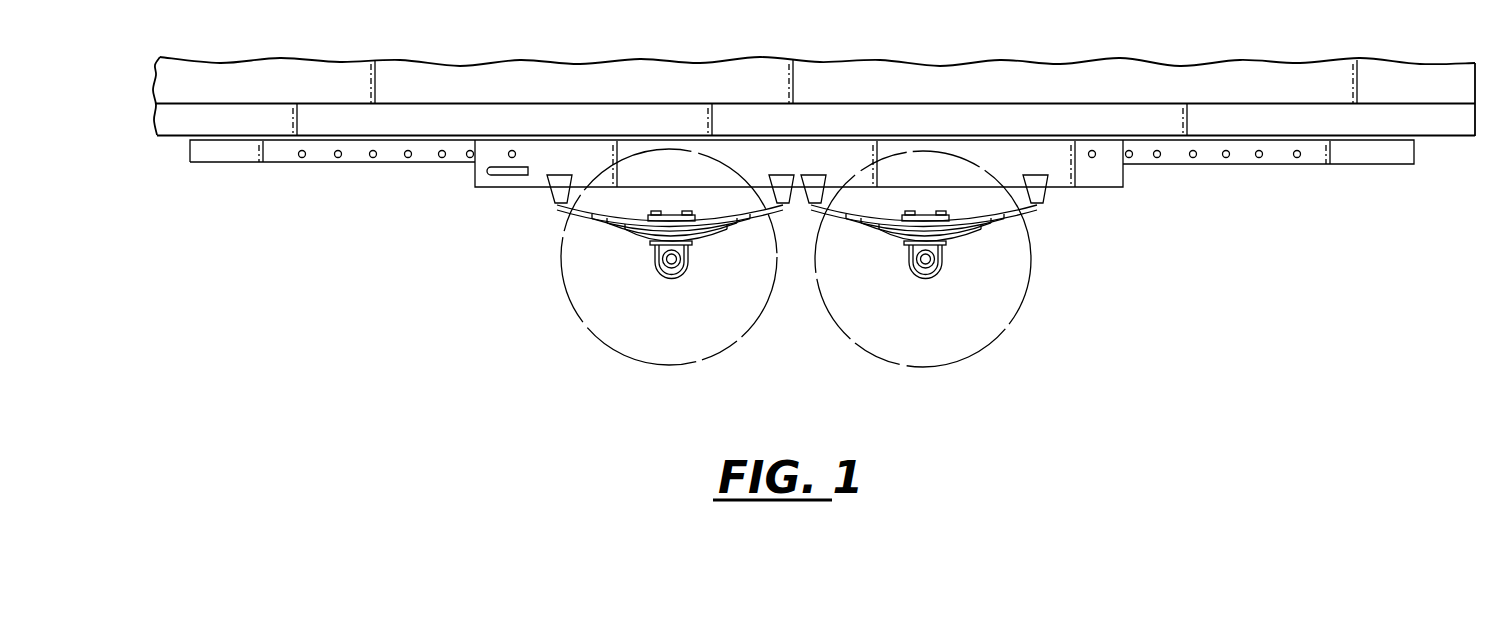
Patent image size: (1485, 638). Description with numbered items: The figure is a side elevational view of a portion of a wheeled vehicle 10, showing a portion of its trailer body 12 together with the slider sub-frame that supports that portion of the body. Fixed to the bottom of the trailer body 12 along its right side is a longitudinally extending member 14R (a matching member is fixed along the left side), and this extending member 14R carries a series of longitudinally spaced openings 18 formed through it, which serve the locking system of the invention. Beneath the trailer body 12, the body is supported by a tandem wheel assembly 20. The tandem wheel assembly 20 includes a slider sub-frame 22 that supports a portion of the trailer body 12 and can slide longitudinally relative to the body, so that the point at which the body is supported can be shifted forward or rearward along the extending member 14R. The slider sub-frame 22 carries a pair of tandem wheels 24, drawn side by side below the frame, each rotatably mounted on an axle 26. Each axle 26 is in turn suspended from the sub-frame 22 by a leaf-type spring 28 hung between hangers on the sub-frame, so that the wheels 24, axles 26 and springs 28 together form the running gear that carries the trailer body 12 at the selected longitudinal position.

The wheeled vehicle 10 is at (1062, 48).
The trailer body 12 is at (1438, 129).
The longitudinally extending member 14R is at (1363, 162).
The openings 18 is at (1258, 156).
The tandem wheel assembly 20 is at (522, 264).
The slider sub-frame 22 is at (1085, 190).
The tandem wheels 24 is at (714, 346).
The axles 26 is at (676, 277).
The springs 28 is at (621, 237).